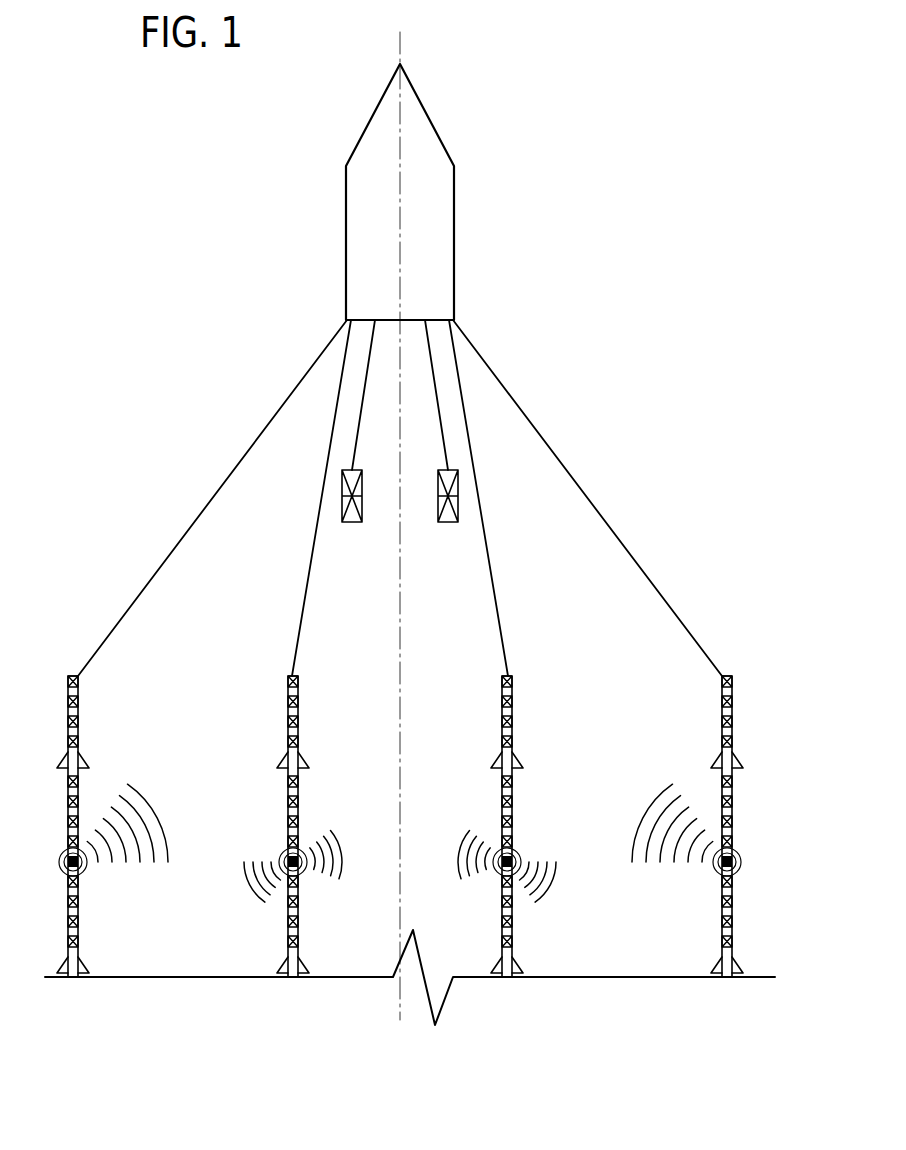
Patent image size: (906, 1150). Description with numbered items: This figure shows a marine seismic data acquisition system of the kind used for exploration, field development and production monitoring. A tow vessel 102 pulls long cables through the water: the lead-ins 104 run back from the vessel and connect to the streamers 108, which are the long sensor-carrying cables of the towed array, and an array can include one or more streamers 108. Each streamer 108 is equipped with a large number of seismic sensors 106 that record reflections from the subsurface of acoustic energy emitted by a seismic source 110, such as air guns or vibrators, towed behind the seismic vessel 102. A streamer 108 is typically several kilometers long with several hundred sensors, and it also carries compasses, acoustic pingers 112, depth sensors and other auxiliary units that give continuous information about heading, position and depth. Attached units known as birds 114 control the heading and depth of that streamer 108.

The tow vessel 102 is at (428, 118).
The lead-in cables 104 is at (315, 517).
The seismic sensors 106 is at (78, 703).
The streamers 108 is at (641, 677).
The seismic source 110 is at (438, 492).
The acoustic pingers 112 is at (767, 882).
The birds 114 is at (553, 948).